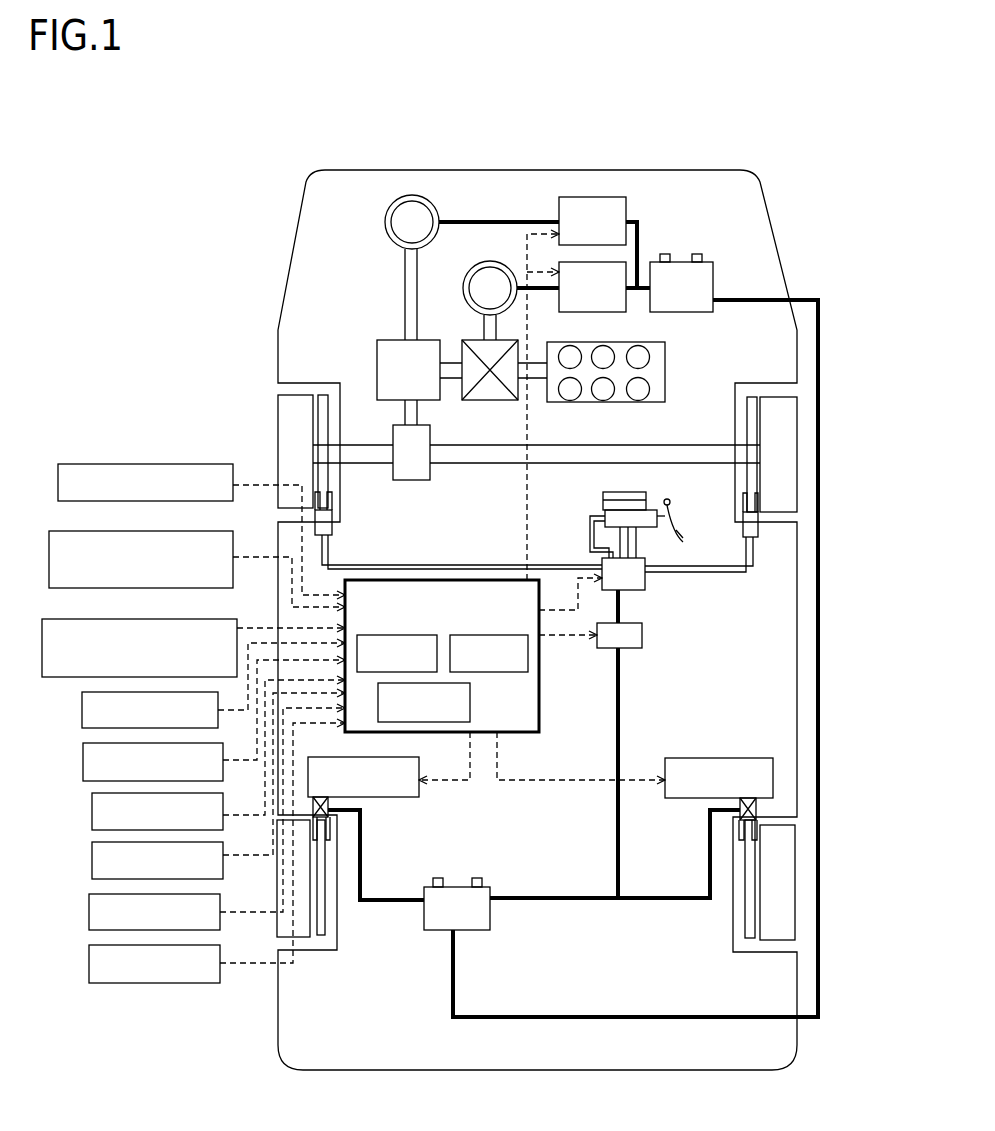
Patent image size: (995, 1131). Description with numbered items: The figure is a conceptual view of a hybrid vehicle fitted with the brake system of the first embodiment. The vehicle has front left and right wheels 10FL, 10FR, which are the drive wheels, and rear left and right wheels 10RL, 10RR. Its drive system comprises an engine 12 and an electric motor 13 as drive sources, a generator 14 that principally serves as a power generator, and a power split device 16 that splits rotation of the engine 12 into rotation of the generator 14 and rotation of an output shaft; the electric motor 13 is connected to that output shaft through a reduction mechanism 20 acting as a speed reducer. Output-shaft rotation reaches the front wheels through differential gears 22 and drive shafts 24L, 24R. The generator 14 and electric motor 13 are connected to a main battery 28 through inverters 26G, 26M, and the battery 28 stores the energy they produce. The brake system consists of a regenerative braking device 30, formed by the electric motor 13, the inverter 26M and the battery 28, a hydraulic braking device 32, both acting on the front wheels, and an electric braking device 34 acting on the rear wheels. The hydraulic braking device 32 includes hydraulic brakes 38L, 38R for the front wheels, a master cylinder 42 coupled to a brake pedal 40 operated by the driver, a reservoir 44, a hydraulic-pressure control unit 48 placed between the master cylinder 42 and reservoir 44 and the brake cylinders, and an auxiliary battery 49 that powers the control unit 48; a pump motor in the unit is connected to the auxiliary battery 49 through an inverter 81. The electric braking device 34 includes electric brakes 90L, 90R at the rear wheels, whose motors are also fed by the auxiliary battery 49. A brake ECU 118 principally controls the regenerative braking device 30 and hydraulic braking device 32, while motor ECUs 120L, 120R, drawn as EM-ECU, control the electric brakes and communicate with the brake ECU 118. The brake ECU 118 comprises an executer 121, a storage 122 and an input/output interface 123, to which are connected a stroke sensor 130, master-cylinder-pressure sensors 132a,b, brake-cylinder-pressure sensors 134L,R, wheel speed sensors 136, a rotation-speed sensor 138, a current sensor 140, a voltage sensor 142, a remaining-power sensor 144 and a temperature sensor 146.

The regenerative braking device 30 is at (464, 192).
The electric motor 13 is at (390, 208).
The generator 14 is at (480, 264).
The reduction mechanism 20 is at (385, 340).
The power split device 16 is at (462, 343).
The engine 12 is at (660, 372).
The inverter 26M is at (604, 200).
The inverter 26G is at (598, 312).
The battery 28 is at (706, 278).
The front left wheel 10FL is at (296, 404).
The front right wheel 10FR is at (778, 410).
The rear left wheel 10RL is at (302, 930).
The rear right wheel 10RR is at (768, 930).
The drive shaft 24L is at (364, 453).
The drive shaft 24R is at (572, 447).
The differential gears 22 is at (431, 436).
The hydraulic brake 38L is at (342, 531).
The hydraulic brake 38R is at (762, 545).
The hydraulic braking device 32 is at (697, 642).
The electric braking device 34 is at (616, 918).
The brake pedal 40 is at (699, 538).
The master cylinder 42 is at (646, 516).
The reservoir 44 is at (606, 492).
The hydraulic-pressure control unit 48 is at (638, 578).
The inverter 81 is at (641, 641).
The auxiliary battery 49 is at (428, 920).
The electric brake 90L is at (343, 828).
The electric brake 90R is at (726, 830).
The brake ECU 118 is at (433, 580).
The motor ECU 120L is at (402, 770).
The motor ECU 120R is at (692, 758).
The executer 121 is at (397, 636).
The storage 122 is at (478, 636).
The input/output interface 123 is at (470, 704).
The stroke sensor 130 is at (58, 485).
The master-cylinder-pressure sensors 132a,b is at (70, 537).
The brake-cylinder-pressure sensors 134L,R is at (82, 619).
The wheel speed sensors 136 is at (82, 710).
The rotation-speed sensor 138 is at (90, 760).
The current sensor 140 is at (92, 813).
The voltage sensor 142 is at (92, 863).
The remaining-power sensor 144 is at (90, 913).
The temperature sensor 146 is at (90, 964).